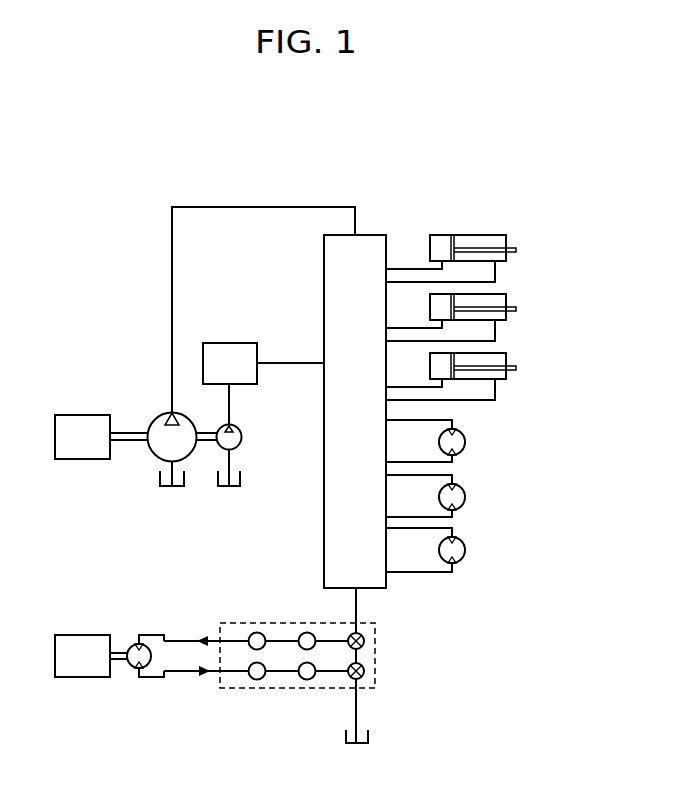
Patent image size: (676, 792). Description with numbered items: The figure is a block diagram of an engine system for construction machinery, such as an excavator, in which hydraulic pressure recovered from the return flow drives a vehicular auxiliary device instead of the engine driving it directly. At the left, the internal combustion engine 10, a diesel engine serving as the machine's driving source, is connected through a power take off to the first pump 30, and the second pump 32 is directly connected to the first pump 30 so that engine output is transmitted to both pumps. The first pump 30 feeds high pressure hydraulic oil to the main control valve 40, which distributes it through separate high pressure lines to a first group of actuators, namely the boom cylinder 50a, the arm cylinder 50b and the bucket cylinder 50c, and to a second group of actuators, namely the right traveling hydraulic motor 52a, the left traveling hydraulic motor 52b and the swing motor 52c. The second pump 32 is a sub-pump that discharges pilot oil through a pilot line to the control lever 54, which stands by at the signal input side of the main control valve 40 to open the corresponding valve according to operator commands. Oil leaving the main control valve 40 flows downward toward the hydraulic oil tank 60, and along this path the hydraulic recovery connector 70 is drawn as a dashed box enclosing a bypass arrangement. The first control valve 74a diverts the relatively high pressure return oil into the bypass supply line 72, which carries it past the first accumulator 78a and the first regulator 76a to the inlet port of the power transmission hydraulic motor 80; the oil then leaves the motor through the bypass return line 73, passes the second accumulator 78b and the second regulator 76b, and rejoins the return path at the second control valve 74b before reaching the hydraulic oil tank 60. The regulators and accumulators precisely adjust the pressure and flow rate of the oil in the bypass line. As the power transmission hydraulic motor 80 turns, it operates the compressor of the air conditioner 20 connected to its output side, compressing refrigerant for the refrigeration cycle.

The internal combustion engine 10 is at (82, 461).
The air conditioner 20 is at (82, 679).
The first pump 30 is at (159, 420).
The second pump 32 is at (242, 437).
The main control valve 40 is at (324, 262).
The boom cylinder 50a is at (506, 240).
The arm cylinder 50b is at (506, 299).
The bucket cylinder 50c is at (506, 358).
The right traveling hydraulic motor 52a is at (465, 442).
The left traveling hydraulic motor 52b is at (465, 497).
The swing motor 52c is at (465, 550).
The control lever 54 is at (228, 343).
The hydraulic oil tank 60 is at (370, 737).
The hydraulic recovery connector 70 is at (372, 622).
The bypass supply line 72 is at (233, 640).
The bypass return line 73 is at (233, 672).
The first control valve 74a is at (364, 641).
The second control valve 74b is at (364, 671).
The first regulator 76a is at (304, 632).
The second regulator 76b is at (306, 680).
The first accumulator 78a is at (255, 632).
The second accumulator 78b is at (257, 680).
The power transmission hydraulic motor 80 is at (133, 668).